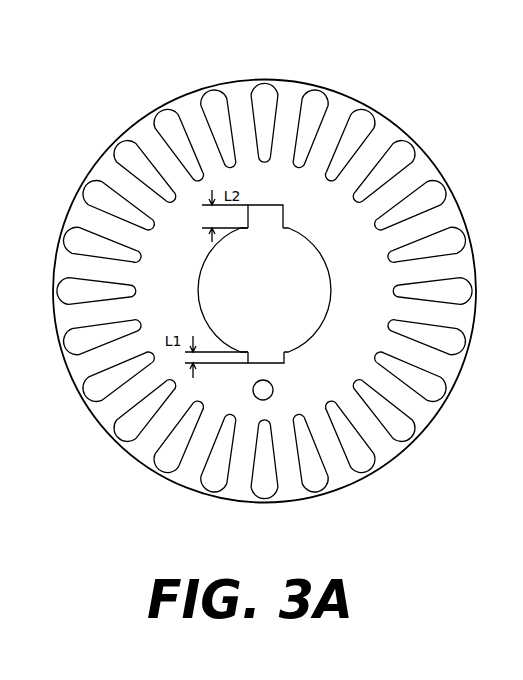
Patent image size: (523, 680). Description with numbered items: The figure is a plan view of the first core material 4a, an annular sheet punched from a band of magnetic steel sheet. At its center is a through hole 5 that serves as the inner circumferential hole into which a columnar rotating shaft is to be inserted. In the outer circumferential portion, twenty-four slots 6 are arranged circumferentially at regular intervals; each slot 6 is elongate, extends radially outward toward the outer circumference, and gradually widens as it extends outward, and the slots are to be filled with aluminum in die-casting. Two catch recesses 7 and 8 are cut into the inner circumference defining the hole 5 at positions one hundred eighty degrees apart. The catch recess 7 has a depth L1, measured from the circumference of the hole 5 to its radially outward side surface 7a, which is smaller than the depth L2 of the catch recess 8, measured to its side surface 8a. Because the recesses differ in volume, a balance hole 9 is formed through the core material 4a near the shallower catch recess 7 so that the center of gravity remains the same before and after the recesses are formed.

The first core material 4a is at (399, 121).
The through hole 5 is at (329, 268).
The slot 6 is at (268, 100).
The catch recess 7 is at (284, 349).
The side surface 7a is at (250, 349).
The catch recess 8 is at (284, 230).
The side surface 8a is at (250, 230).
The balance hole 9 is at (275, 393).